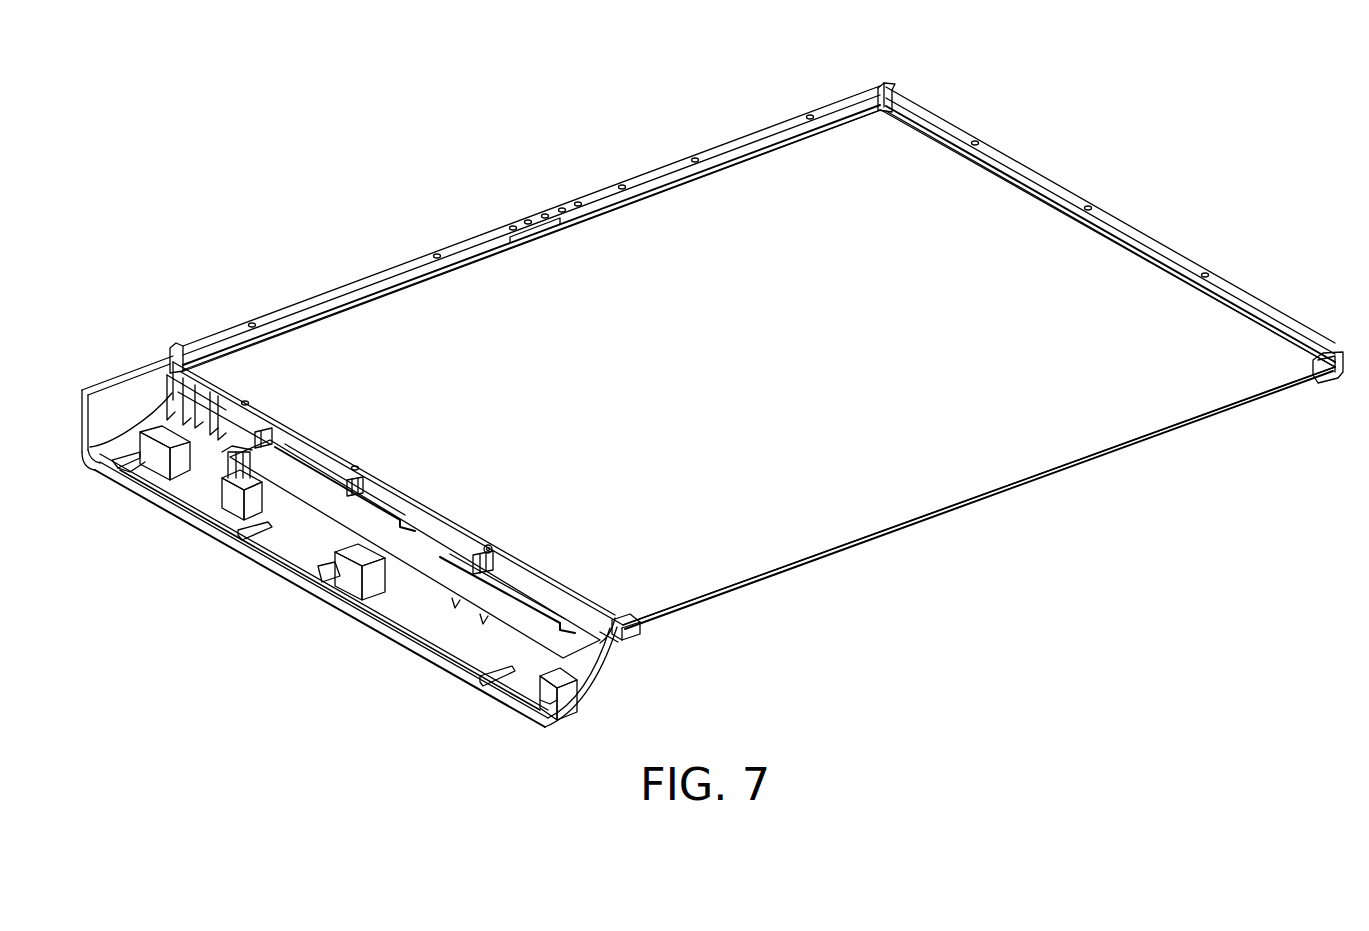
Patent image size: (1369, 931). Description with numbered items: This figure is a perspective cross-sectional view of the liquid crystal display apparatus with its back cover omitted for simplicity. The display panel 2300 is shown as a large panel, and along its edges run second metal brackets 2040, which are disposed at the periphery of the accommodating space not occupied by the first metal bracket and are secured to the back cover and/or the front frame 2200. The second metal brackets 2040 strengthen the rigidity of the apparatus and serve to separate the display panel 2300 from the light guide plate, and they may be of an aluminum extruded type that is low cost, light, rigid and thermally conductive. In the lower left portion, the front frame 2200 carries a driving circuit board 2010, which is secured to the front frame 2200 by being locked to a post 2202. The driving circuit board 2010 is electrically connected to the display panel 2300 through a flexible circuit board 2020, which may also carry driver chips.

The second metal bracket 2040 is at (1252, 303).
The display panel 2300 is at (957, 490).
The front frame 2200 is at (568, 722).
The post 2202 is at (223, 470).
The driving circuit board 2010 is at (575, 640).
The flexible circuit board 2020 is at (630, 628).